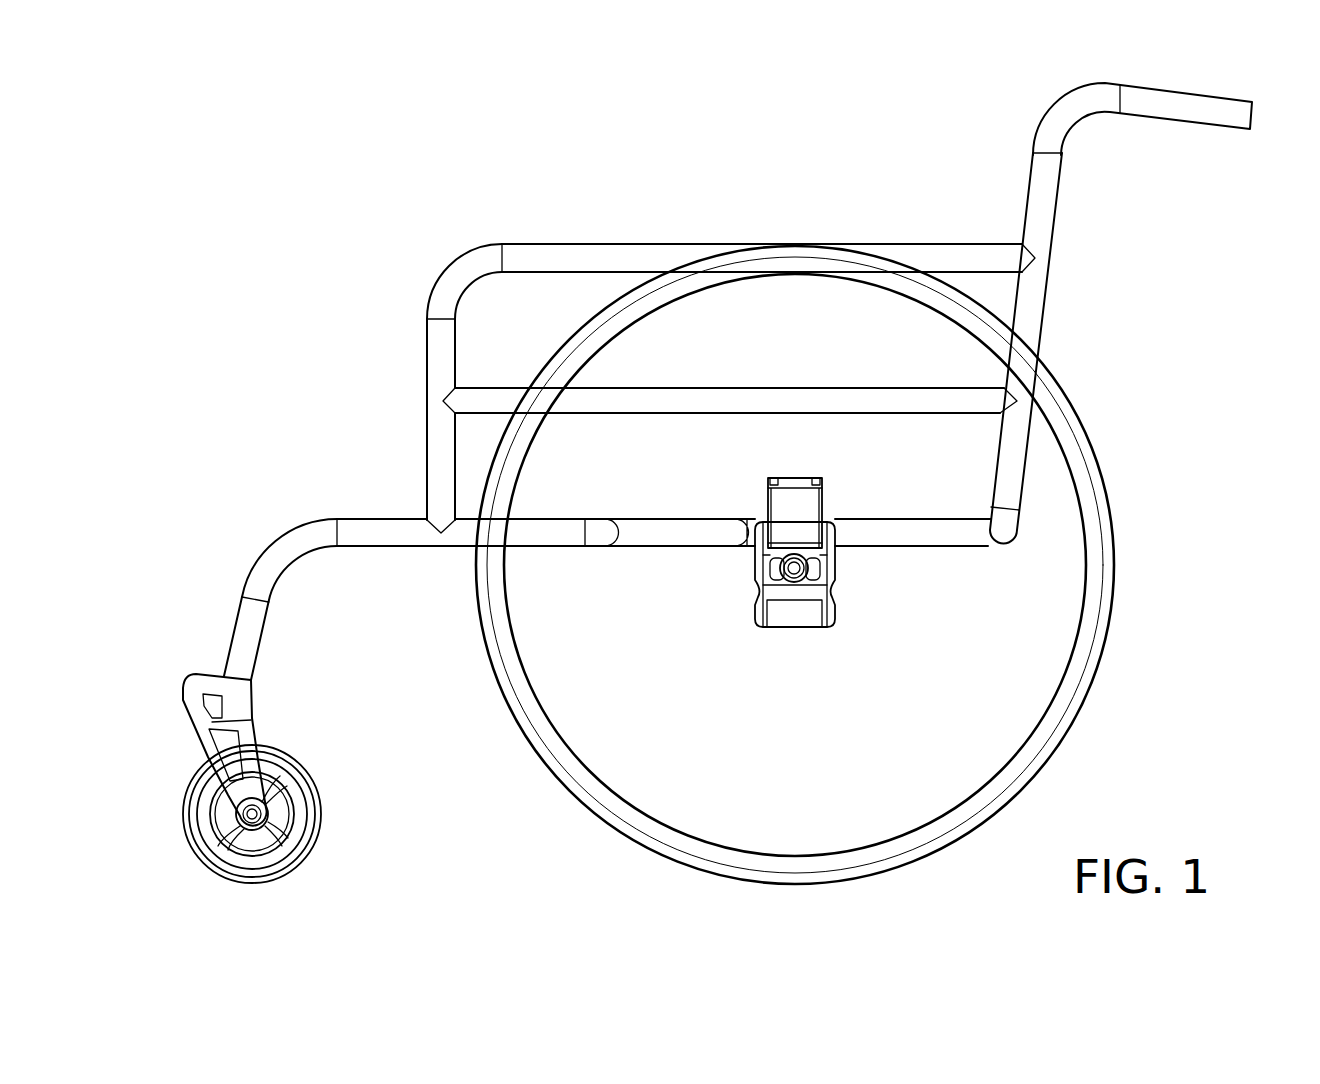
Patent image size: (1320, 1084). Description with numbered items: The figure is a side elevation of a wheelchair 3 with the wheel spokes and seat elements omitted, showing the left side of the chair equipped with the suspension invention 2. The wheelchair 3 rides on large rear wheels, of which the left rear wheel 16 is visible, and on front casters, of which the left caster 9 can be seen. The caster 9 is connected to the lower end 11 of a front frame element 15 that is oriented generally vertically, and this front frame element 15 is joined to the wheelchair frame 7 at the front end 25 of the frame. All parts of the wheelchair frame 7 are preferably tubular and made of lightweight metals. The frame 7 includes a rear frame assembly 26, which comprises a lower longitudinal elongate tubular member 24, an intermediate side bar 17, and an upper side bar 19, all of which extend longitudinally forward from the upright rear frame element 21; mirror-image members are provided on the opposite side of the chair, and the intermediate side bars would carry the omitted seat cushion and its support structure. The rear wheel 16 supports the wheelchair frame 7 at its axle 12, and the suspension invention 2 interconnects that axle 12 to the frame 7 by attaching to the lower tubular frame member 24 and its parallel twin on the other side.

The suspension invention 2 is at (838, 588).
The wheelchair 3 is at (226, 472).
The wheelchair frame 7 is at (420, 548).
The caster 9 is at (320, 790).
The lower end 11 is at (236, 712).
The axle 12 is at (793, 576).
The front frame element 15 is at (233, 640).
The rear wheel 16 is at (1100, 468).
The intermediate side bar 17 is at (655, 418).
The upper side bar 19 is at (658, 243).
The upright rear frame element 21 is at (1043, 331).
The lower longitudinal elongate tubular member 24 is at (842, 505).
The front end 25 is at (344, 548).
The rear frame assembly 26 is at (1050, 279).